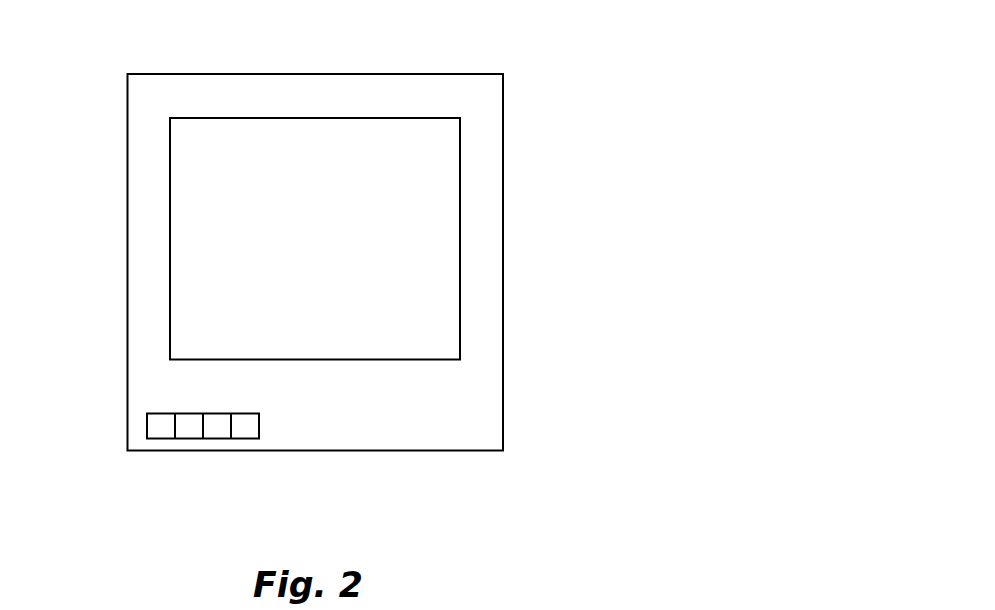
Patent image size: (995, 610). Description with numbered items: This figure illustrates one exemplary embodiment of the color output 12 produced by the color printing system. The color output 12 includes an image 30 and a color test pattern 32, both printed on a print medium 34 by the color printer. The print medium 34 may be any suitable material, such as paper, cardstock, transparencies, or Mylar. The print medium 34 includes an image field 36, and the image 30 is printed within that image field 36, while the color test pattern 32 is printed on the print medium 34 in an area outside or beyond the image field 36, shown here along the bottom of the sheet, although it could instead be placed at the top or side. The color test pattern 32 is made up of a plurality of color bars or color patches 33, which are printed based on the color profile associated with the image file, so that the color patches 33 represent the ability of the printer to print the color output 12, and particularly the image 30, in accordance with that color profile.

The color output 12 is at (545, 47).
The image 30 is at (325, 261).
The color test pattern 32 is at (167, 474).
The color patches 33 is at (243, 422).
The print medium 34 is at (495, 403).
The image field 36 is at (460, 205).